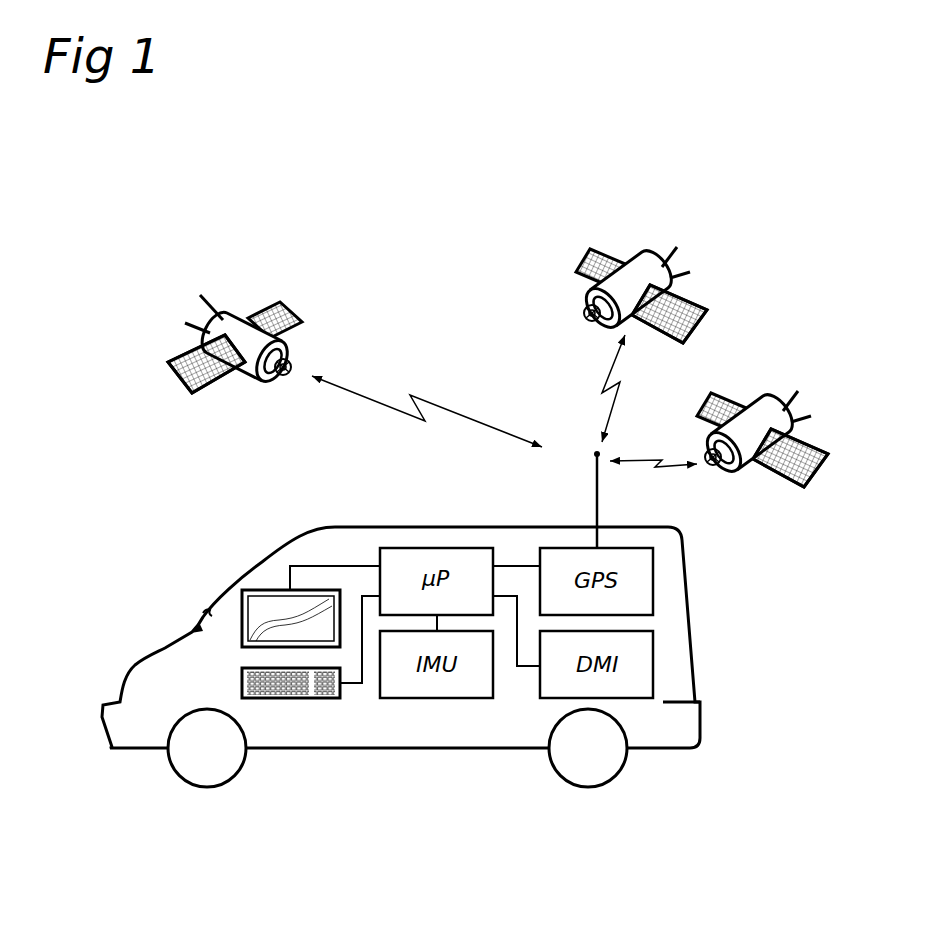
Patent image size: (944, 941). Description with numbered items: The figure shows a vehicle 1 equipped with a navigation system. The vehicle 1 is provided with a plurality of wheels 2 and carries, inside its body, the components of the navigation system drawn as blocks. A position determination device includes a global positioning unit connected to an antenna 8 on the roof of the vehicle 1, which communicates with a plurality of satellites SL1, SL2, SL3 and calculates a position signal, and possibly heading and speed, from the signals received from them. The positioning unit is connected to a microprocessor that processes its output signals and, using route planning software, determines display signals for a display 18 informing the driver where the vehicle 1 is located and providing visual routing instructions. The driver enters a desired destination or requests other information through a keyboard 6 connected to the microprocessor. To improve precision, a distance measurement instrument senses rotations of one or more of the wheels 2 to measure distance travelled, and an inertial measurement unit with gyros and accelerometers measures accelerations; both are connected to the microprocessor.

The vehicle 1 is at (165, 663).
The wheels 2 is at (195, 760).
The keyboard 6 is at (252, 680).
The antenna 8 is at (595, 495).
The display 18 is at (268, 608).
The satellite SL1 is at (235, 329).
The satellite SL2 is at (669, 295).
The satellite SL3 is at (762, 414).